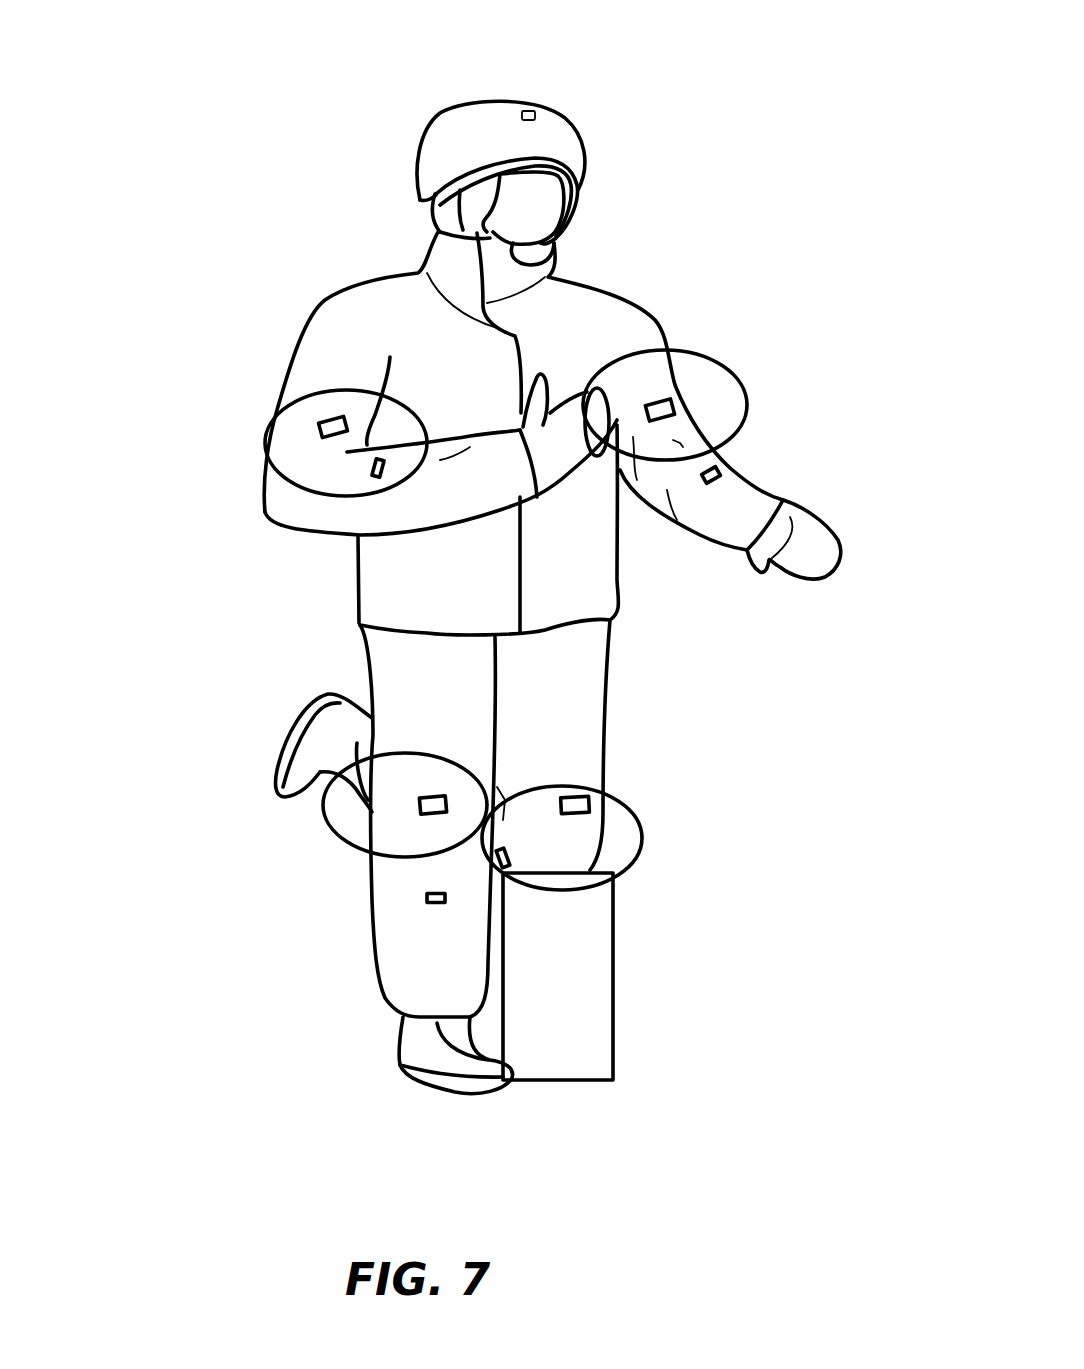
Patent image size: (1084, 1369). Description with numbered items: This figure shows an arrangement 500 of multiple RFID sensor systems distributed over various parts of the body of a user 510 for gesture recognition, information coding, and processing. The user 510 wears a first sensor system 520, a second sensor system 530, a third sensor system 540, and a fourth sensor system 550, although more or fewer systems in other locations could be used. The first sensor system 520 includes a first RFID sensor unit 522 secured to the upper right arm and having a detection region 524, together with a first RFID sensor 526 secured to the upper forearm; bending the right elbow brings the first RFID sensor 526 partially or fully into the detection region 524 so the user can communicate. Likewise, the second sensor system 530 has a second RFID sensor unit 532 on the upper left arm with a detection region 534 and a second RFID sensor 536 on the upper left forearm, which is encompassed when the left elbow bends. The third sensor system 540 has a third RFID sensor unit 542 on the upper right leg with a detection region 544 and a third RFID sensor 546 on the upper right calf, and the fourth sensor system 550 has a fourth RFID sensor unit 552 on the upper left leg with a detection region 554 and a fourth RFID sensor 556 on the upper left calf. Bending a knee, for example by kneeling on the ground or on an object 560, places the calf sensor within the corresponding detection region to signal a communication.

The wearable sensor system worn by user 500 is at (342, 100).
The user 510 is at (311, 325).
The first sensor system 520 is at (170, 409).
The first RFID sensor unit 522 is at (337, 415).
The detection region 524 is at (268, 505).
The first RFID sensor 526 is at (372, 466).
The second sensor system 530 is at (719, 304).
The second RFID sensor unit 532 is at (675, 405).
The detection region 534 is at (746, 393).
The second RFID sensor 536 is at (718, 480).
The third sensor system 540 is at (298, 814).
The third RFID sensor unit 542 is at (420, 808).
The detection region 544 is at (362, 850).
The third RFID sensor 546 is at (435, 903).
The fourth sensor system 550 is at (662, 750).
The fourth RFID sensor unit 552 is at (592, 808).
The detection region 554 is at (643, 830).
The fourth RFID sensor 556 is at (508, 855).
The object 560 is at (593, 988).